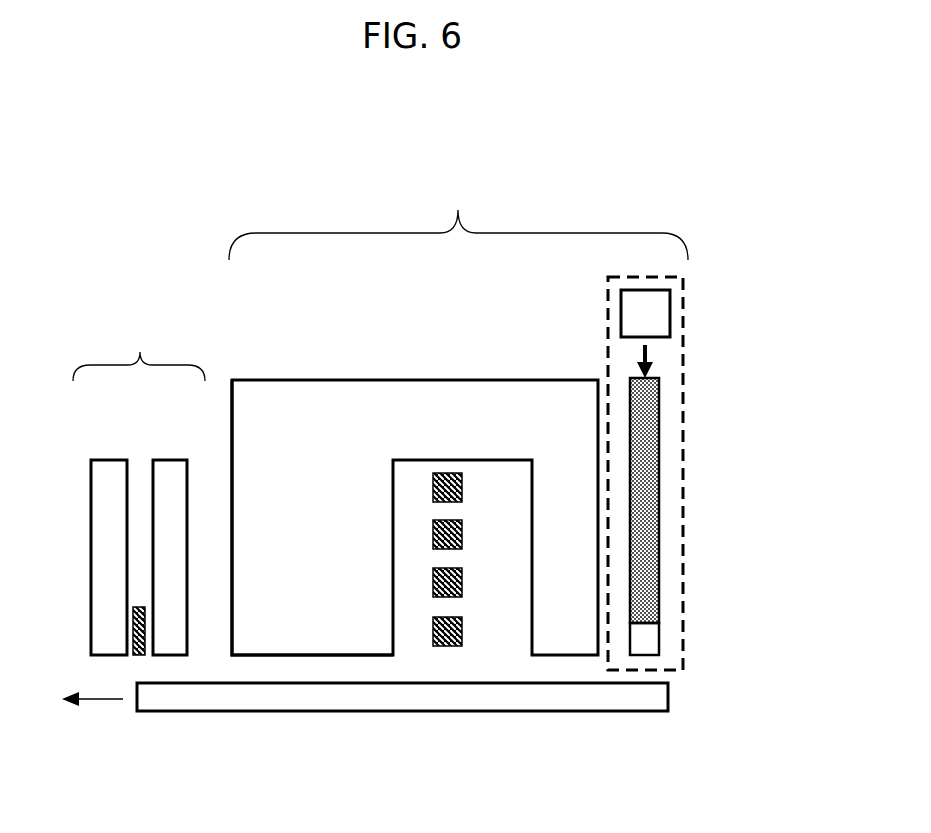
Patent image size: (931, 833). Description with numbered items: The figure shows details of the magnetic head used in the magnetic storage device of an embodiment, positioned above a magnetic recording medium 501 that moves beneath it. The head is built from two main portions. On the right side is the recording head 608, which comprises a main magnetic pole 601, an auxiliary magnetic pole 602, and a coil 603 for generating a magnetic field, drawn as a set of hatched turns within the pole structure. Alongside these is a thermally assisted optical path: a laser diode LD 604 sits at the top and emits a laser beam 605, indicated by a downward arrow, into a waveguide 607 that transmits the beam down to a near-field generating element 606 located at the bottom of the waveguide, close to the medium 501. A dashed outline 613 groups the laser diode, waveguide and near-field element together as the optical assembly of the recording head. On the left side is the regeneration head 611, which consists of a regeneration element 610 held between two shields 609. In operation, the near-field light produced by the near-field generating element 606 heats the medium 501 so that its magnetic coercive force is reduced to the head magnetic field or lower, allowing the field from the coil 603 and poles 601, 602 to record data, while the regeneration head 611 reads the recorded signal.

The magnetic recording medium 501 is at (653, 697).
The main magnetic pole 601 is at (577, 590).
The auxiliary magnetic pole 602 is at (310, 580).
The coil 603 is at (462, 483).
The laser diode 604 is at (657, 317).
The laser beam 605 is at (650, 355).
The near-field generating element 606 is at (645, 642).
The waveguide 607 is at (645, 422).
The recording head 608 is at (458, 215).
The shields 609 is at (168, 480).
The regeneration element 610 is at (133, 613).
The regeneration head 611 is at (139, 348).
The gas supply unit 613 is at (605, 327).